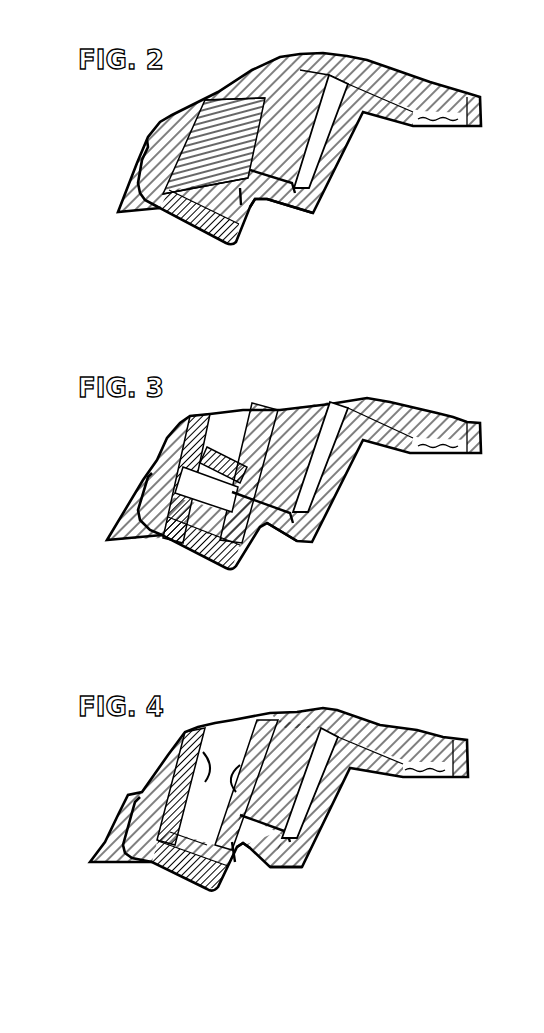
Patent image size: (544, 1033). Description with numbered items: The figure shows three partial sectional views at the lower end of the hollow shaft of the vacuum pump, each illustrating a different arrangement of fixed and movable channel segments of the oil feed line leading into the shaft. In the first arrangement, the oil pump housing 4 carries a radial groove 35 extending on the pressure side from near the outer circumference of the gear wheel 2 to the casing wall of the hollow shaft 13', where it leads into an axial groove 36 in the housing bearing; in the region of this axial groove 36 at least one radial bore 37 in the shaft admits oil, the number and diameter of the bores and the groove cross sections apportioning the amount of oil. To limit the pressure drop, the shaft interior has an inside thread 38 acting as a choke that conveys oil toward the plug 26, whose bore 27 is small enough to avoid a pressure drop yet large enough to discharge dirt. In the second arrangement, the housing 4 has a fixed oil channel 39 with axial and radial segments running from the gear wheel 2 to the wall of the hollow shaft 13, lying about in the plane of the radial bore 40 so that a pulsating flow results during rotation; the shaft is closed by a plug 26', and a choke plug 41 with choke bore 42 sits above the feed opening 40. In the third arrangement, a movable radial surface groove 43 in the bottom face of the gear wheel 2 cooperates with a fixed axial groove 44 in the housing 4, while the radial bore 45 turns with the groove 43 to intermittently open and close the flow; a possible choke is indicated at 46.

In FIG. 2, the gear wheel 2 is at (318, 172).
In FIG. 3, the gear wheel 2 is at (322, 505).
In FIG. 4, the gear wheel 2 is at (310, 825).
In FIG. 2, the oil pump housing 4 is at (345, 137).
In FIG. 3, the oil pump housing 4 is at (340, 465).
In FIG. 4, the oil pump housing 4 is at (322, 787).
In FIG. 3, the hollow shaft 13 is at (193, 463).
In FIG. 2, the hollow shaft 13' is at (195, 140).
In FIG. 2, the plug 26 is at (182, 223).
In FIG. 4, the plug 26 is at (171, 874).
In FIG. 3, the plug 26' is at (195, 558).
In FIG. 2, the bore 27 is at (190, 213).
In FIG. 4, the bore 27 is at (174, 873).
In FIG. 2, the radial groove 35 is at (275, 190).
In FIG. 2, the axial groove 36 is at (255, 213).
In FIG. 2, the radial bore 37 is at (230, 243).
In FIG. 2, the inside thread 38 is at (243, 100).
In FIG. 3, the fixed oil channel 39 is at (278, 534).
In FIG. 3, the radial bore 40 is at (246, 497).
In FIG. 3, the choke plug 41 is at (262, 437).
In FIG. 3, the choke bore 42 is at (223, 460).
In FIG. 4, the radial surface groove 43 is at (287, 868).
In FIG. 4, the fixed axial groove 44 is at (250, 850).
In FIG. 4, the radial bore 45 is at (238, 830).
In FIG. 4, the choke 46 is at (195, 765).